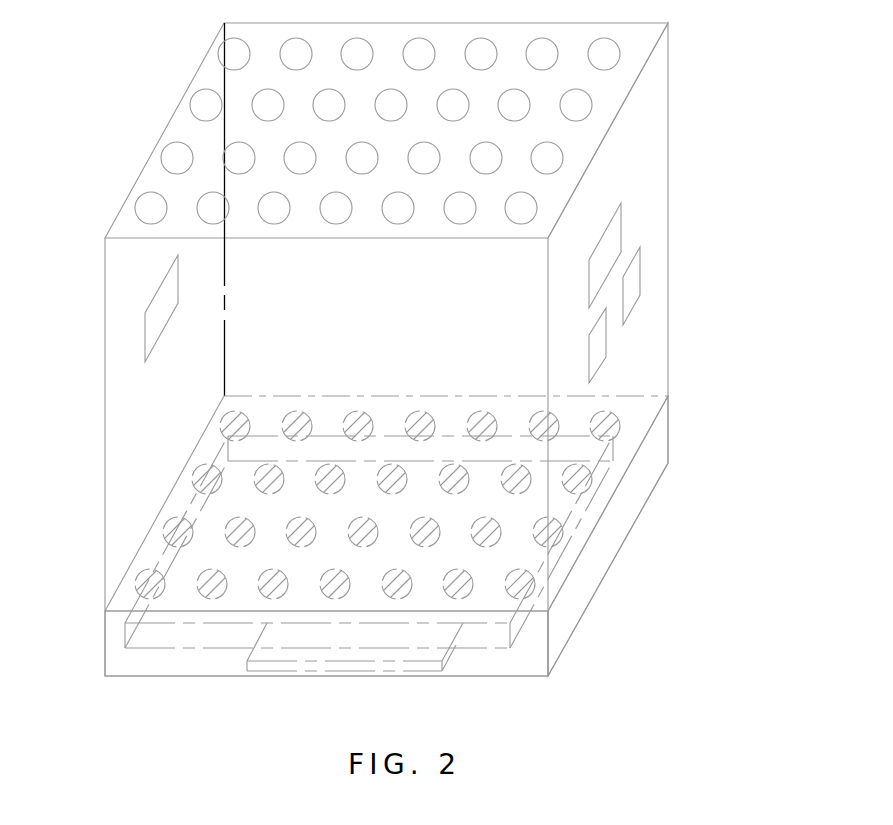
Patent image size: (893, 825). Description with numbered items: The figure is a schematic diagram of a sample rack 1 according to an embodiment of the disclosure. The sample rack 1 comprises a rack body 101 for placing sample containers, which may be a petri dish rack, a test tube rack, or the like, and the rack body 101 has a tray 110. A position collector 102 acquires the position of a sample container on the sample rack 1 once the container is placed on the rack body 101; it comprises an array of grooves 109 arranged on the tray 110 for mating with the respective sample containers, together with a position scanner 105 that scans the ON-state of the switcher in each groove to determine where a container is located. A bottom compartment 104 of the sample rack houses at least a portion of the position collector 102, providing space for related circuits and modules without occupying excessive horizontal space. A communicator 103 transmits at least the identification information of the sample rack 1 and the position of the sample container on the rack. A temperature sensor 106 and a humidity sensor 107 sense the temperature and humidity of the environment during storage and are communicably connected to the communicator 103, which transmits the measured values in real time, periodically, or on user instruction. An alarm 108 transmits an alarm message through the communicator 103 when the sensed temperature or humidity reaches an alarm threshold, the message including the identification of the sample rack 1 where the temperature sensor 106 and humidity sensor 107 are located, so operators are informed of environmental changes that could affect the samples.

The sample rack 1 is at (128, 80).
The rack body 101 is at (668, 108).
The position collector 102 is at (492, 648).
The communicator 103 is at (621, 228).
The bottom compartment 104 is at (200, 663).
The position scanner 105 is at (323, 662).
The temperature sensor 106 is at (640, 273).
The humidity sensor 107 is at (606, 345).
The alarm 108 is at (145, 335).
The array of grooves 109 is at (500, 540).
The tray 110 is at (668, 427).